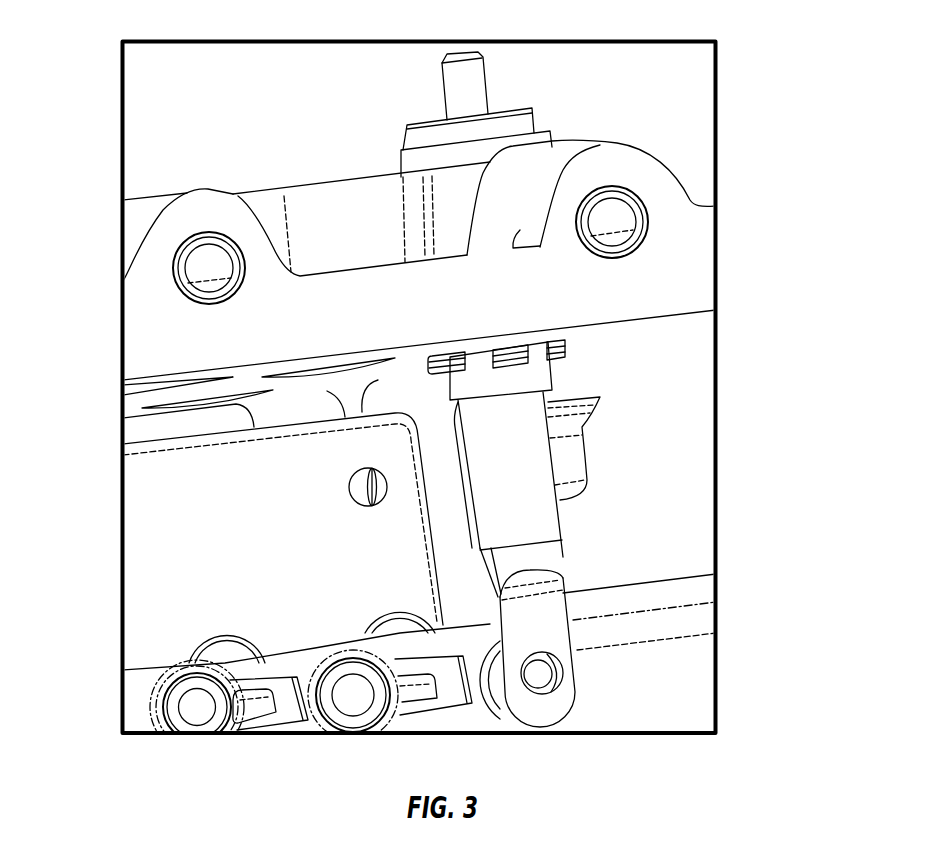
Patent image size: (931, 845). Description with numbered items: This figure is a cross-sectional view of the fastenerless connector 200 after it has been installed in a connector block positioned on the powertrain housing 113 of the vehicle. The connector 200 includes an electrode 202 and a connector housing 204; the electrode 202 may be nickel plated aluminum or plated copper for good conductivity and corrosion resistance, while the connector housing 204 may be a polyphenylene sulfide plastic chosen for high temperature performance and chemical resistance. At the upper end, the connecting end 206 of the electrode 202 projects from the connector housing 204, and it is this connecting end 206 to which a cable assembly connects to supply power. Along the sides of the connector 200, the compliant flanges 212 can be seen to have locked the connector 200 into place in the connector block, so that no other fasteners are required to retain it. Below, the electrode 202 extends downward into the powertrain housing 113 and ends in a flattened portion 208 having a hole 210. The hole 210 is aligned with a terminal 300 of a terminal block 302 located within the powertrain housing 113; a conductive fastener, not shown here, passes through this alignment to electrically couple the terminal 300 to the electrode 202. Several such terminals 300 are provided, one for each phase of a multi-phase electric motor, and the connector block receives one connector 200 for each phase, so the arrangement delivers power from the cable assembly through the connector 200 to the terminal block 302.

The powertrain housing 113 is at (690, 255).
The connector 200 is at (444, 88).
The electrode 202 is at (542, 468).
The connector housing 204 is at (493, 152).
The connecting end 206 is at (463, 69).
The flattened portion 208 is at (579, 641).
The hole 210 is at (572, 677).
The compliant flanges 212 is at (535, 351).
The terminal 300 is at (173, 718).
The terminal block 302 is at (183, 557).